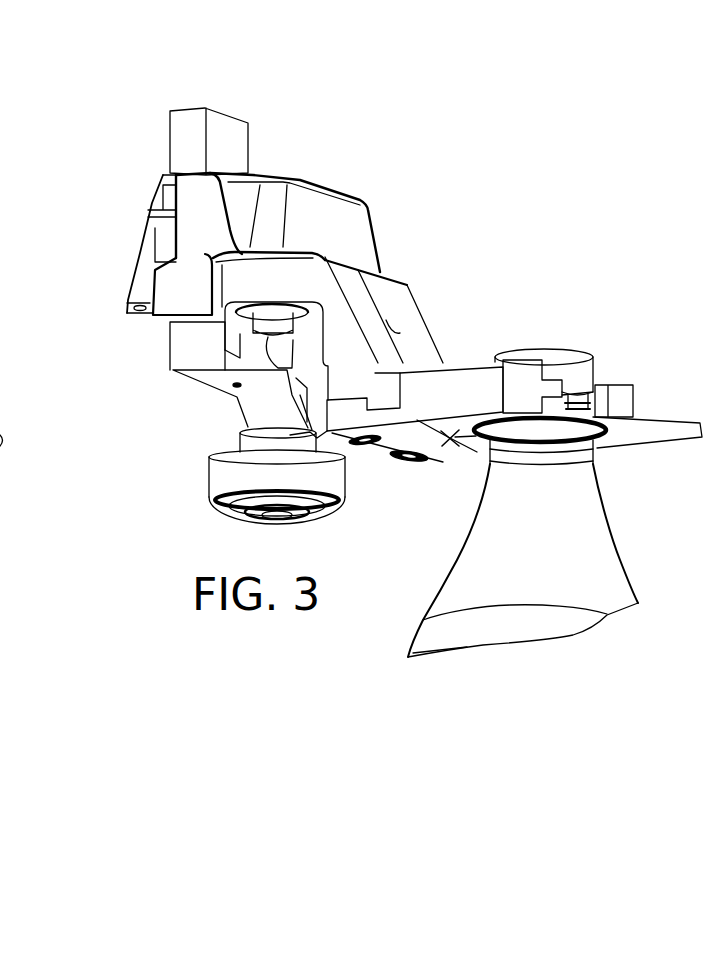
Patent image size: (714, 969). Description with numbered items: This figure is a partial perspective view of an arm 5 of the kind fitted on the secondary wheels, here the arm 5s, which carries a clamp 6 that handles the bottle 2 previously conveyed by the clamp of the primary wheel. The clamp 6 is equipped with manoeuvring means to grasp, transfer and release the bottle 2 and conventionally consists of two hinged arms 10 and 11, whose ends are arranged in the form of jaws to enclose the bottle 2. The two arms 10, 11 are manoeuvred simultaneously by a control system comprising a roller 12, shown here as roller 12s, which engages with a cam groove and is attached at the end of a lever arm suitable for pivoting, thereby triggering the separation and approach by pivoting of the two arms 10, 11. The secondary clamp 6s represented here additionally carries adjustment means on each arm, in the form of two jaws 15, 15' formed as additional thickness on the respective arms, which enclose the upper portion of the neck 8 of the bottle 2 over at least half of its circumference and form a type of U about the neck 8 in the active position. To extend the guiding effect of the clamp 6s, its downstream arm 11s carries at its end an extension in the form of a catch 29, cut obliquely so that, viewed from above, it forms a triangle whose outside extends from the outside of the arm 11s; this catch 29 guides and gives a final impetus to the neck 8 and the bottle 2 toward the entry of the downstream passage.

The bottle 2 is at (585, 563).
The arm 5 is at (293, 269).
The arm 5s is at (357, 238).
The clamp 6 is at (396, 361).
The clamp 6s is at (455, 358).
The neck 8 is at (582, 372).
The arm 10 is at (448, 438).
The arm 11 is at (484, 501).
The downstream arm 11s is at (466, 457).
The roller 12 is at (220, 476).
The roller 12s is at (222, 470).
The jaw 15 is at (532, 352).
The jaw 15' is at (645, 396).
The catch 29 is at (670, 440).